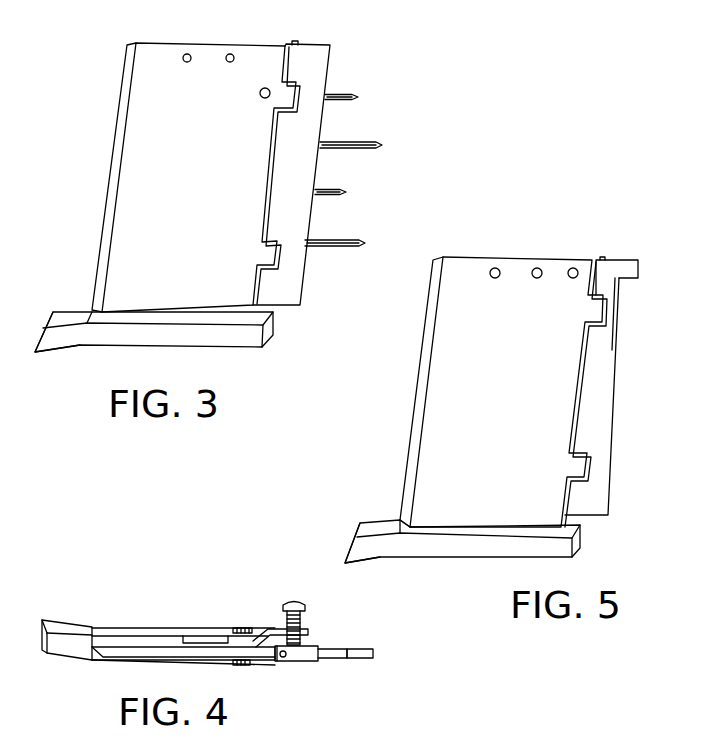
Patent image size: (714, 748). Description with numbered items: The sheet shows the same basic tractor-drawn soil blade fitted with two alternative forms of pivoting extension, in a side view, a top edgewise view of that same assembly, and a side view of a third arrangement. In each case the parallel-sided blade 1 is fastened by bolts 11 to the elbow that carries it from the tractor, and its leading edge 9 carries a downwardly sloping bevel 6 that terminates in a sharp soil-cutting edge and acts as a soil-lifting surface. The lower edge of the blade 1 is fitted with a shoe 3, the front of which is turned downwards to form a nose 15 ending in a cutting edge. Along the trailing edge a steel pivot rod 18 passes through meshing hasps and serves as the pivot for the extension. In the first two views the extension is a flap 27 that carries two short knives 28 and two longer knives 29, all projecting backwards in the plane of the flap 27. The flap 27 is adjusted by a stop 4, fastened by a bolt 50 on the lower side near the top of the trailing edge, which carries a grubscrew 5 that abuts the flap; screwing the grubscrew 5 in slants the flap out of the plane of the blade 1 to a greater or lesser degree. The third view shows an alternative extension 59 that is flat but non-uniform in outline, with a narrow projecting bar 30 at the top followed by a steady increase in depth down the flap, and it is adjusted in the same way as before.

In FIG. 3, the blade 1 is at (160, 135).
In FIG. 4, the blade 1 is at (183, 640).
In FIG. 3, the shoe 3 is at (157, 338).
In FIG. 5, the shoe 3 is at (487, 553).
In FIG. 4, the shoe 3 is at (147, 627).
In FIG. 4, the stop 4 is at (270, 628).
In FIG. 4, the grubscrew 5 is at (290, 604).
In FIG. 5, the bevel 6 is at (419, 364).
In FIG. 3, the leading edge 9 is at (109, 165).
In FIG. 4, the leading edge 9 is at (102, 662).
In FIG. 5, the bolts 11 is at (460, 316).
In FIG. 3, the nose 15 is at (58, 345).
In FIG. 5, the nose 15 is at (380, 555).
In FIG. 4, the nose 15 is at (87, 626).
In FIG. 3, the steel pivot rod 18 is at (272, 308).
In FIG. 5, the steel pivot rod 18 is at (588, 300).
In FIG. 3, the flap 27 is at (318, 68).
In FIG. 4, the flap 27 is at (296, 662).
In FIG. 3, the short knives 28 is at (360, 99).
In FIG. 4, the short knives 28 is at (323, 652).
In FIG. 3, the longer knives 29 is at (383, 148).
In FIG. 4, the longer knives 29 is at (362, 652).
In FIG. 5, the projecting bar 30 is at (638, 268).
In FIG. 3, the bolt 50 is at (261, 99).
In FIG. 5, the bolt 50 is at (571, 268).
In FIG. 4, the bolt 50 is at (237, 629).
In FIG. 5, the extension 59 is at (598, 354).